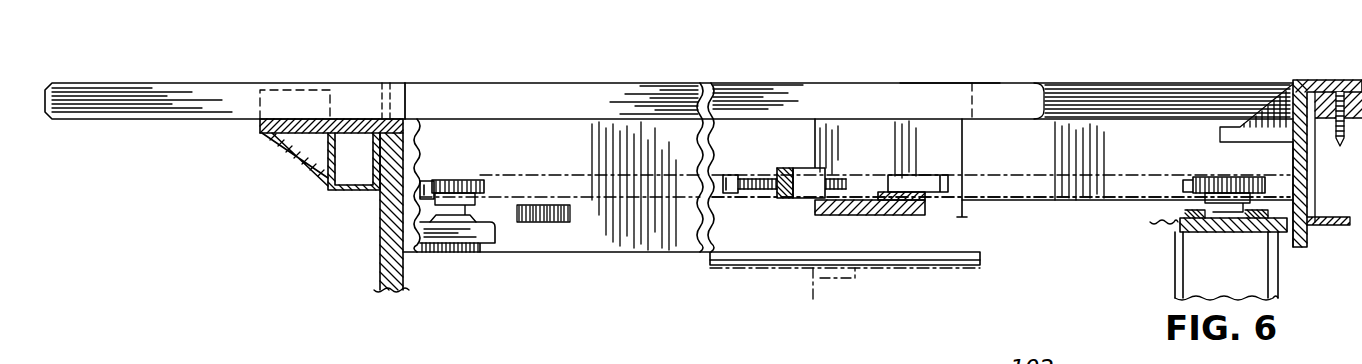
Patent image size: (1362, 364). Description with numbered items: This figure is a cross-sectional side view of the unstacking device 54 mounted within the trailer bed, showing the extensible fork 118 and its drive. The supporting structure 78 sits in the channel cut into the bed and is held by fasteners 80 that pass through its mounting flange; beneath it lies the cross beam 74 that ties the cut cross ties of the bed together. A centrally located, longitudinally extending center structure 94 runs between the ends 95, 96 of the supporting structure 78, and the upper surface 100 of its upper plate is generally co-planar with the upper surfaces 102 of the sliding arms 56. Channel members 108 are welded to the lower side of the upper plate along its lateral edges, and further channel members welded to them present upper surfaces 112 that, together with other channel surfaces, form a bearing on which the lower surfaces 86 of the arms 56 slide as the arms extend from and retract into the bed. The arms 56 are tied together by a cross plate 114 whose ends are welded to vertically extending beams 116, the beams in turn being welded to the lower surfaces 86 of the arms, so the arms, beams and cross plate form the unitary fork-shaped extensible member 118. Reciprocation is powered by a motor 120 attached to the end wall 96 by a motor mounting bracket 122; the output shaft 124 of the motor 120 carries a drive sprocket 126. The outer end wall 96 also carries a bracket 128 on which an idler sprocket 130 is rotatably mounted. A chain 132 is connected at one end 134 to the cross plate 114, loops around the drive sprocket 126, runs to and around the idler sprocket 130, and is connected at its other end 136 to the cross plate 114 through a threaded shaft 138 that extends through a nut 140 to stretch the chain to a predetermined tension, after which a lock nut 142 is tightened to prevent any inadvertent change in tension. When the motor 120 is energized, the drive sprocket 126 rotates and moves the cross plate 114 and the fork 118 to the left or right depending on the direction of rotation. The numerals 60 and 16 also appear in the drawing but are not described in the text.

The arms 56 is at (154, 80).
The mounting bracket (hidden) 60 is at (257, 88).
The upper surfaces of the arms 102 is at (421, 83).
The upper surfaces of the channel members 112 is at (575, 118).
The lower surfaces of the arms 86 is at (665, 126).
The unstacking device 54 is at (947, 42).
The upper surface of the upper plate 100 is at (1076, 84).
The center structure 94 is at (1170, 82).
The supporting structure 78 is at (1308, 78).
The fasteners 80 is at (1336, 82).
The end wall of the supporting structure 96 is at (1292, 162).
The end of the supporting structure 95 is at (420, 150).
The chain 132 is at (429, 193).
The idler sprocket 130 is at (467, 193).
The channel members 108 is at (583, 164).
The bracket 128 is at (493, 246).
The other end of the chain 136 is at (743, 175).
The lock nut 142 is at (772, 199).
The threaded shaft 138 is at (781, 168).
The nut 140 is at (803, 203).
The one end of the chain 134 is at (905, 175).
The cross plate 114 is at (905, 218).
The vertically extending beams 116 is at (958, 138).
The extensible fork 118 is at (972, 214).
The drive sprocket 126 is at (1214, 177).
The output shaft 124 is at (1222, 232).
The motor 120 is at (1233, 286).
The motor mounting bracket 122 is at (1145, 230).
The frame member 16 is at (720, 270).
The cross beam 74 is at (818, 297).